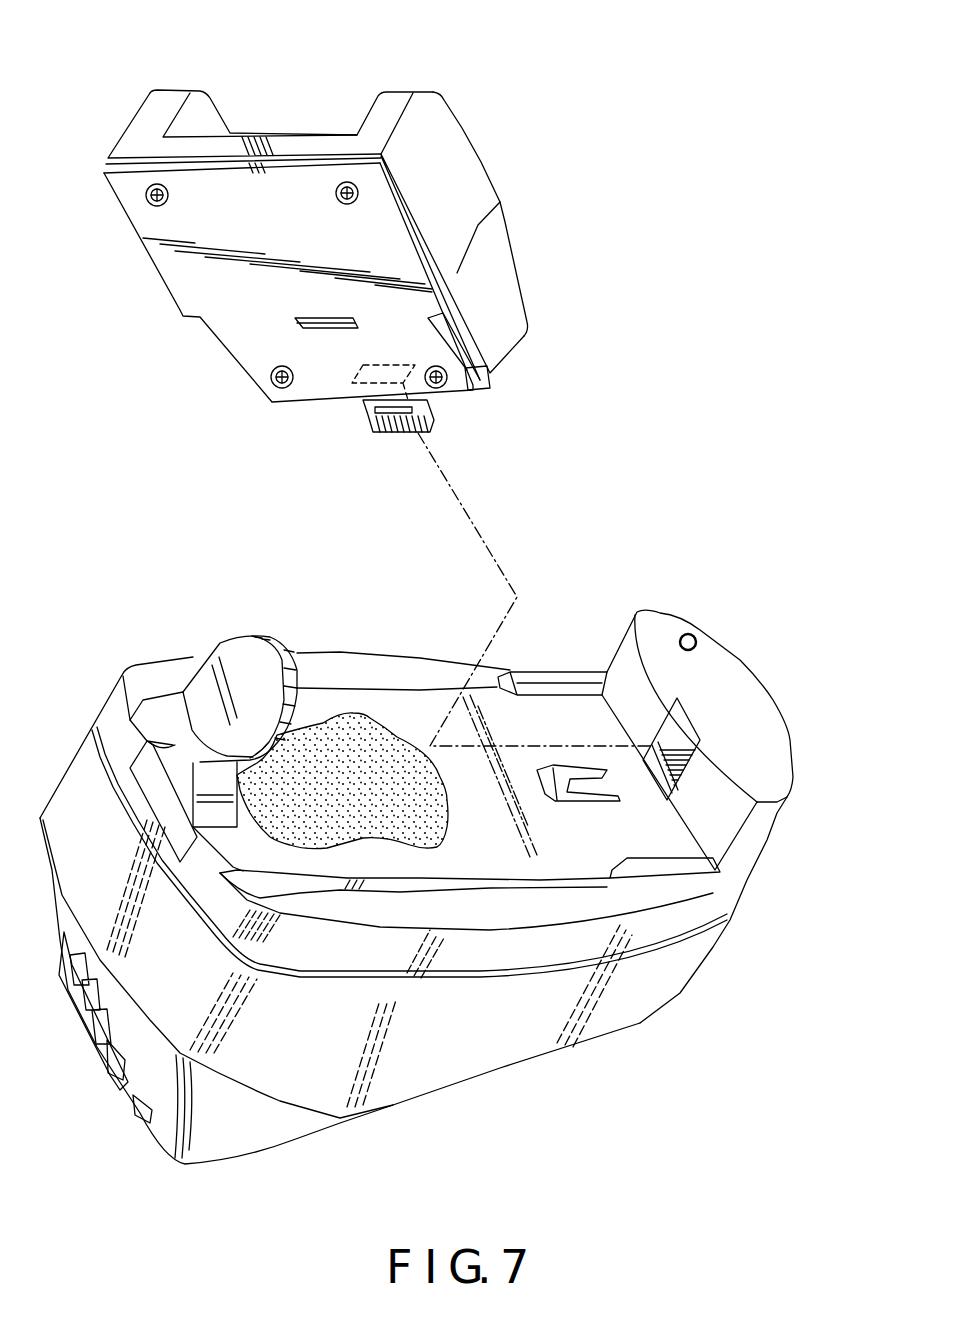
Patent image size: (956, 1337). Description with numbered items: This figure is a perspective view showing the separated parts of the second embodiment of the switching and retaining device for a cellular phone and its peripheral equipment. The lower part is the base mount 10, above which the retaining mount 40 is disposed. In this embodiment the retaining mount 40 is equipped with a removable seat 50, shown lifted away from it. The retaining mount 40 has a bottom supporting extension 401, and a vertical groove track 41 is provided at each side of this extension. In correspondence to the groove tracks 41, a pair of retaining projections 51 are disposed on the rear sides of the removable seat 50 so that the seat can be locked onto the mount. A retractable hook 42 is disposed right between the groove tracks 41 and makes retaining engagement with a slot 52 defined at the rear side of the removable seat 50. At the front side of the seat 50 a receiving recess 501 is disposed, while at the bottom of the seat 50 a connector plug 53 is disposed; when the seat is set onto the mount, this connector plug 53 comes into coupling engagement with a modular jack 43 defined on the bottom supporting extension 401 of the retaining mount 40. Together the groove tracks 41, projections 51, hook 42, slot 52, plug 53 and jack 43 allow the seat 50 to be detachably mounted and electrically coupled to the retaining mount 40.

The base mount 10 is at (595, 1020).
The retaining mount 40 is at (710, 913).
The vertical groove track 41 is at (512, 677).
The retractable hook 42 is at (567, 770).
The modular jack 43 is at (634, 618).
The bottom supporting extension 401 is at (723, 767).
The removable seat 50 is at (532, 292).
The receiving recess 501 is at (265, 124).
The retaining projection 51 is at (493, 374).
The slot 52 is at (320, 323).
The connector plug 53 is at (367, 413).